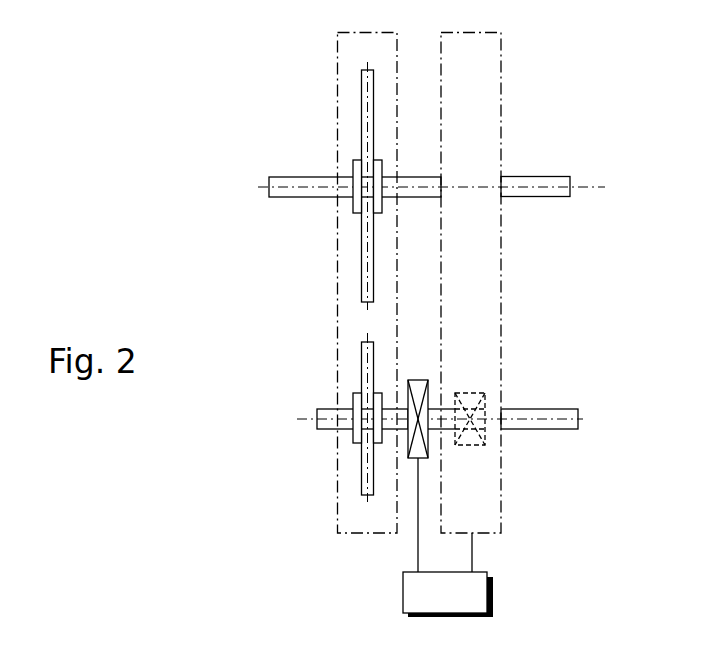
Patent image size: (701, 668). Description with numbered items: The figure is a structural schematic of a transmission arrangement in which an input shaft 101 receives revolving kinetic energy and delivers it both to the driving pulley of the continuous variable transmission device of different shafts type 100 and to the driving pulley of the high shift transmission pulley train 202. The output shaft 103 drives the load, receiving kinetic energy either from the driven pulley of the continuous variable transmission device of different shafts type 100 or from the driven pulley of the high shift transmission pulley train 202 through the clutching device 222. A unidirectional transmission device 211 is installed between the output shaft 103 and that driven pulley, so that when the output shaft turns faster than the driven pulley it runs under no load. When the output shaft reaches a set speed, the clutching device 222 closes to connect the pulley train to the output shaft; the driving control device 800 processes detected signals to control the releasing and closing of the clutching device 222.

The continuous variable transmission device of different shafts type 100 is at (501, 270).
The input shaft 101 is at (522, 176).
The output shaft 103 is at (548, 409).
The high shift transmission pulley train 202 is at (338, 286).
The unidirectional transmission device 211 is at (468, 391).
The clutching device 222 is at (417, 380).
The driving control device 800 is at (408, 600).